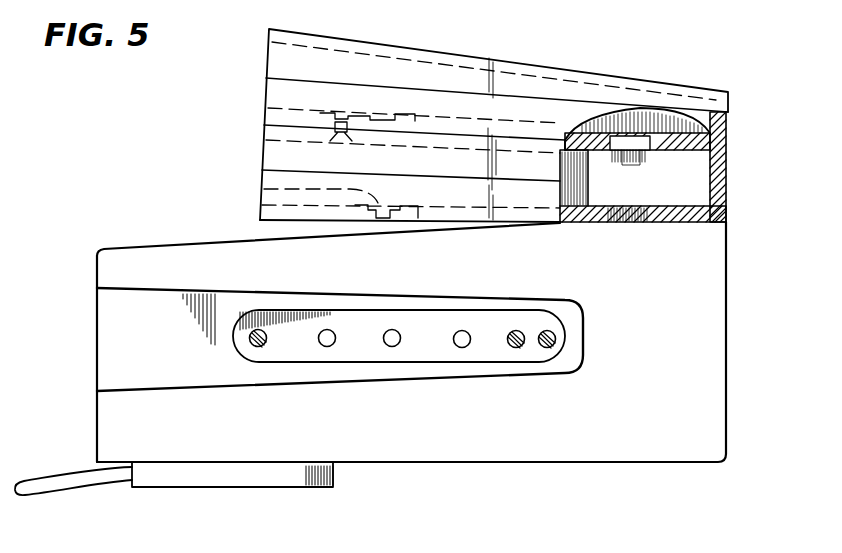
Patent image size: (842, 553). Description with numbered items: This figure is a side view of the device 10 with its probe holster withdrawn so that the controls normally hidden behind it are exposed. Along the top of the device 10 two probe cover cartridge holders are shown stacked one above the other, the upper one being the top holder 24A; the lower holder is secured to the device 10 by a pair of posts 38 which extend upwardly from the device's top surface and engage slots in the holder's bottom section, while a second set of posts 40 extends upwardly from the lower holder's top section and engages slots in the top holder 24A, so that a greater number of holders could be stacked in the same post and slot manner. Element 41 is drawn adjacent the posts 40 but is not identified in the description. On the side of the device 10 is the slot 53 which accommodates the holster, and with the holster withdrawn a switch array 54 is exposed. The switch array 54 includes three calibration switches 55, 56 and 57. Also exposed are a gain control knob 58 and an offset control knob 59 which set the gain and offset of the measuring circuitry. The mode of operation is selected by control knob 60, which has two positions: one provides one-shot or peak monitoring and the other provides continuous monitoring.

The device 10 is at (682, 443).
The top holder 24A is at (508, 80).
The posts 38 is at (262, 196).
The second set of posts 40 is at (613, 112).
The fastening screw 41 is at (648, 140).
The slot 53 is at (108, 307).
The switch array 54 is at (426, 342).
The calibration switch 55 is at (327, 348).
The calibration switch 56 is at (392, 348).
The calibration switch 57 is at (462, 349).
The gain control knob 58 is at (516, 349).
The offset control knob 59 is at (547, 349).
The control knob 60 is at (262, 348).